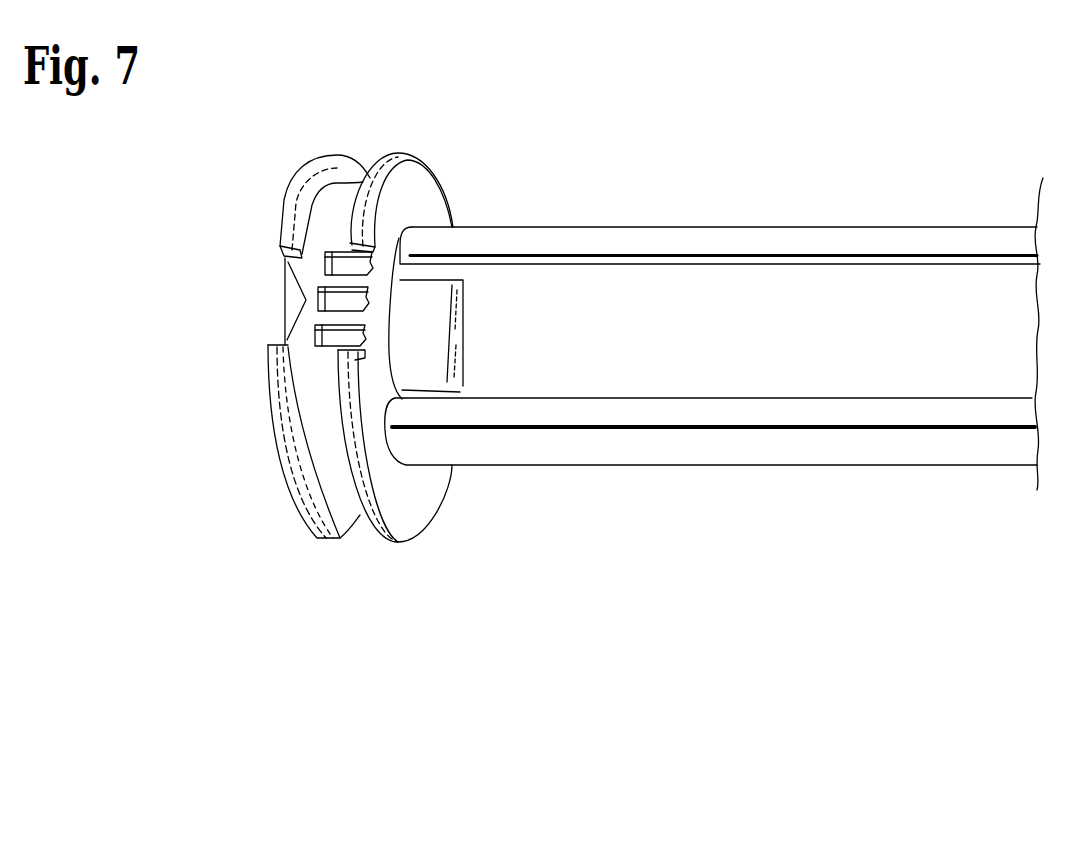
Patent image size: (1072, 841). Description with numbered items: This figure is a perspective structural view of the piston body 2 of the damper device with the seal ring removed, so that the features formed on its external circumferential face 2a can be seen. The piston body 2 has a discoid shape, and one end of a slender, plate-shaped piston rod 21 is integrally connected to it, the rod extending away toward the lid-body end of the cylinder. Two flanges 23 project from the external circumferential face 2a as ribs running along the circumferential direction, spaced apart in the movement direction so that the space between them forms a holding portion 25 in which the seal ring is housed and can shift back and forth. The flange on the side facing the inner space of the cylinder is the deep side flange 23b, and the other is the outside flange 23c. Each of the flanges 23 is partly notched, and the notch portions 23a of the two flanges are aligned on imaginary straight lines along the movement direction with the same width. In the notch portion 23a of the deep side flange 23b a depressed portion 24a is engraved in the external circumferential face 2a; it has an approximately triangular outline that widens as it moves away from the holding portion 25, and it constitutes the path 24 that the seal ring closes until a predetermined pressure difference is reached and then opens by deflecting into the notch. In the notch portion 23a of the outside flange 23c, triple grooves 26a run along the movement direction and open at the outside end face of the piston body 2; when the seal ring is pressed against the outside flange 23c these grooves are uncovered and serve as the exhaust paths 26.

The piston body 2 is at (318, 538).
The external circumferential face 2a is at (323, 430).
The piston rod 21 is at (797, 238).
The flanges 23 is at (366, 318).
The notch portion 23a is at (372, 246).
The deep side flange 23b is at (322, 162).
The outside flange 23c is at (398, 153).
The path 24 is at (263, 294).
The depressed portion 24a is at (300, 302).
The holding portion 25 is at (318, 490).
The exhaust paths 26 is at (481, 329).
The triple grooves 26a is at (363, 267).